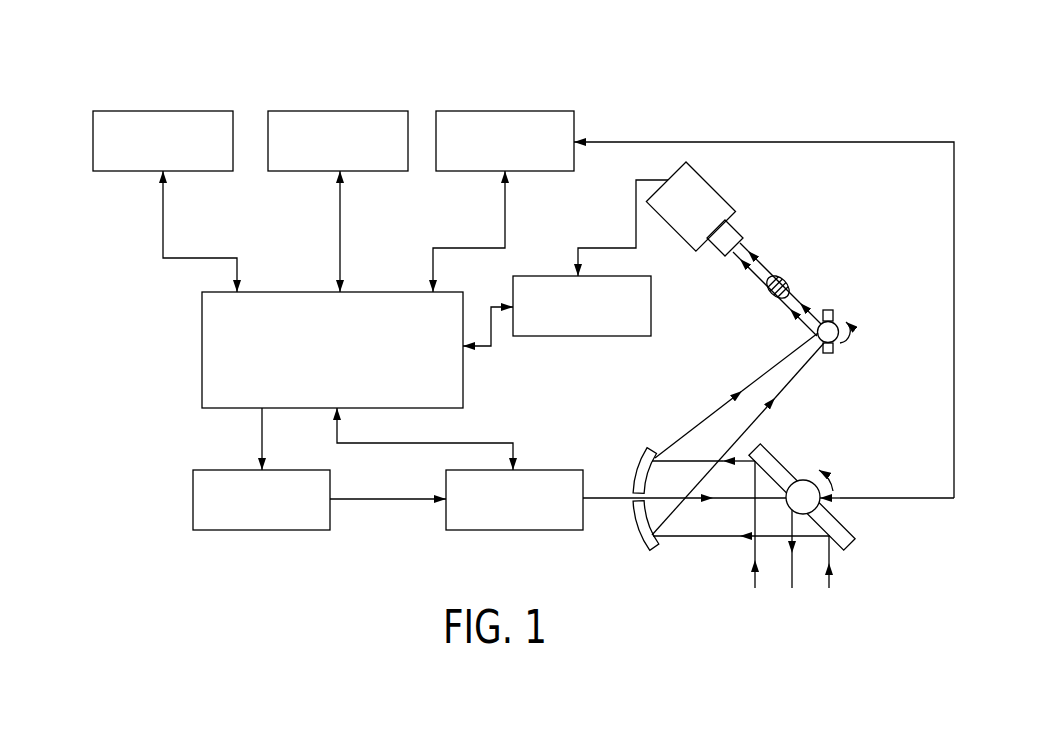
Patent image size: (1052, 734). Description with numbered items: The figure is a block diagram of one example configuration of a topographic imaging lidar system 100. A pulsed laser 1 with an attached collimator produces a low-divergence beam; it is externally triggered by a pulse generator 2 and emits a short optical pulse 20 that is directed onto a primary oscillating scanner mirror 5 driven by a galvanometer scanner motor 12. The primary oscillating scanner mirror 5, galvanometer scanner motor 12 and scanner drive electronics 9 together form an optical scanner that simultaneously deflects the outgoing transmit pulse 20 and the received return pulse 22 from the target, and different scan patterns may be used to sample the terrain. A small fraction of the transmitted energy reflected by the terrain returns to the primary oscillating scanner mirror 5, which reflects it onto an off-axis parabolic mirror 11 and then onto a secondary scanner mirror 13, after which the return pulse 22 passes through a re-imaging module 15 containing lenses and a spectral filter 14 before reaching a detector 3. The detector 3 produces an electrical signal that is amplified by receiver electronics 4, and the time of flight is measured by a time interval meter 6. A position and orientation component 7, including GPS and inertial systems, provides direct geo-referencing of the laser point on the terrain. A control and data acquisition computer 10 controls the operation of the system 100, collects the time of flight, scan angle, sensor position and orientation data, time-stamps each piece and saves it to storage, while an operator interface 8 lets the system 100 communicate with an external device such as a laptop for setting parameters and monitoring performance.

The topographic imaging lidar system 100 is at (95, 68).
The pulsed laser 1 is at (514, 500).
The pulse generator 2 is at (319, 500).
The detector 3 is at (725, 238).
The receiver electronics 4 is at (657, 219).
The primary oscillating scanner mirror 5 is at (853, 538).
The time interval meter 6 is at (582, 306).
The position and orientation component 7 is at (165, 201).
The operator interface 8 is at (338, 201).
The scanner drive electronics 9 is at (693, 304).
The control and data acquisition computer 10 is at (357, 381).
The off-axis parabolic mirror 11 is at (653, 552).
The galvanometer scanner motor 12 is at (809, 492).
The secondary scanner mirror 13 is at (835, 347).
The spectral filter 14 is at (798, 283).
The re-imaging module 15 is at (780, 268).
The optical pulse 20 is at (593, 502).
The return pulse 22 is at (710, 412).